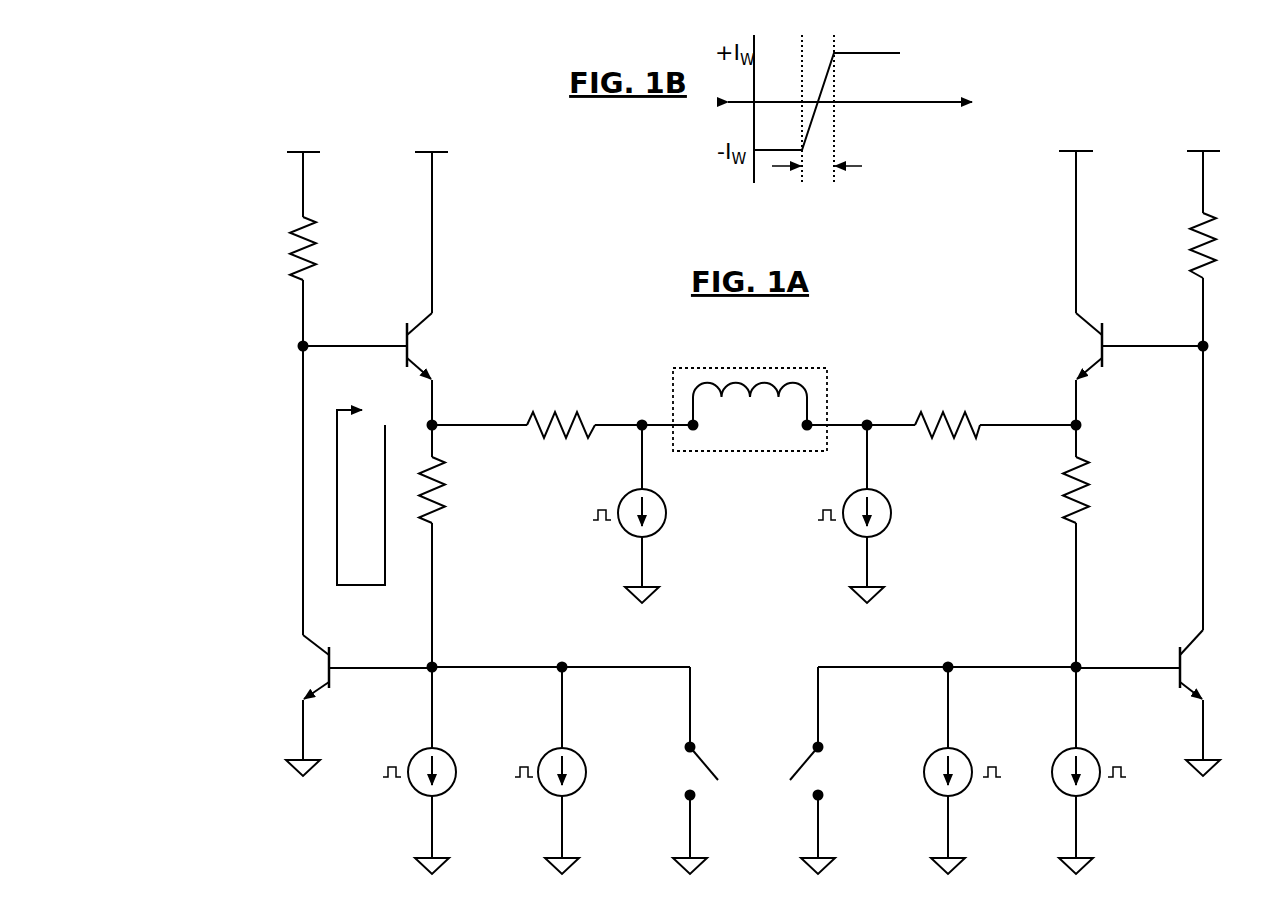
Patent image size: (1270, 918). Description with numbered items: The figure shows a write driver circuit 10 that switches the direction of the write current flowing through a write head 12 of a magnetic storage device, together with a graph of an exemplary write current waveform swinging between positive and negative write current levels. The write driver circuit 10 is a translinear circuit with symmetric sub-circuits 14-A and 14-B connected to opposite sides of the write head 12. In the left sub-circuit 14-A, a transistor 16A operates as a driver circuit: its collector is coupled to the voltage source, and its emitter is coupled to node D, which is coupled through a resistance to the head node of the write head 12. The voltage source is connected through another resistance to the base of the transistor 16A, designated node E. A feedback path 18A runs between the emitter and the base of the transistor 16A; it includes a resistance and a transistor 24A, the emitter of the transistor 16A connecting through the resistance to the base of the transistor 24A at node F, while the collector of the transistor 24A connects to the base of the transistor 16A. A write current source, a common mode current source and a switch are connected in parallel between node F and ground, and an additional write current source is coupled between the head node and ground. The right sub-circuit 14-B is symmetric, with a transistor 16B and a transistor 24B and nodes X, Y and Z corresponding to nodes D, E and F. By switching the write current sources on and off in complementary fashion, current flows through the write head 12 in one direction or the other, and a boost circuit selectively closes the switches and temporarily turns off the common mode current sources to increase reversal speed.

The write driver circuit 10 is at (917, 244).
The write head 12 is at (724, 368).
The sub-circuit 14-A is at (531, 342).
The sub-circuit 14-B is at (977, 342).
The transistor 16A is at (415, 312).
The transistor 16B is at (1086, 312).
The feedback path 18A is at (345, 590).
The transistor 24A is at (338, 660).
The transistor 24B is at (1172, 660).